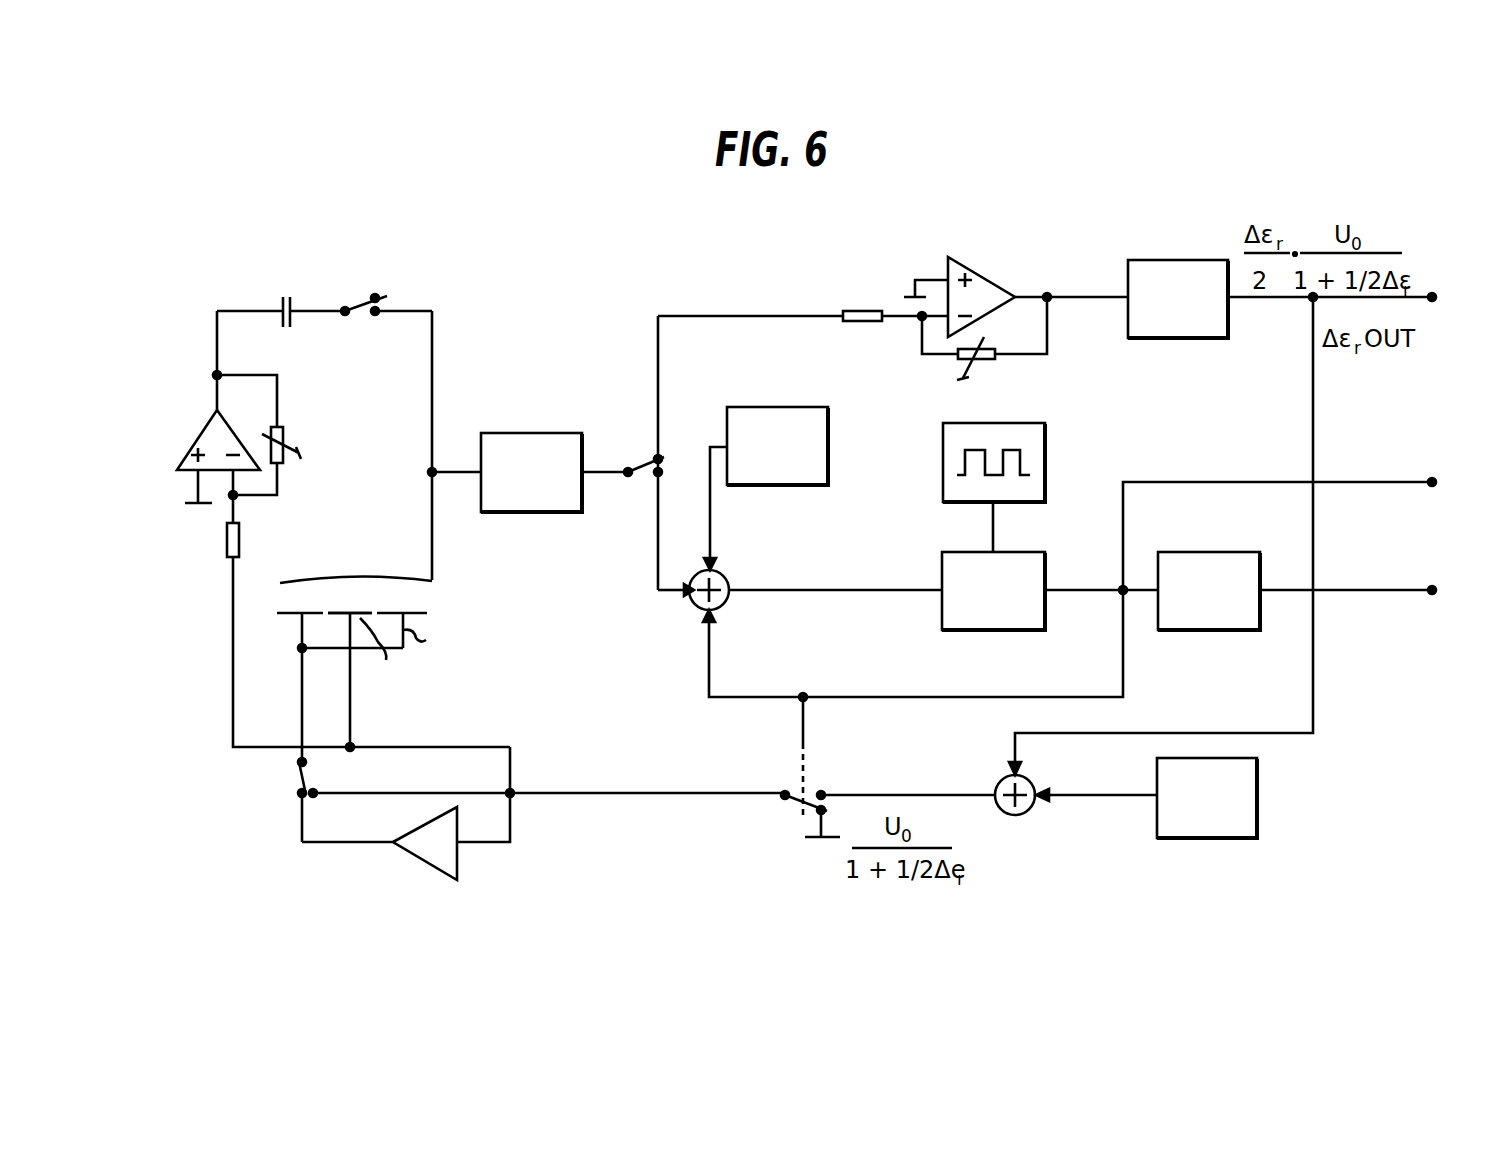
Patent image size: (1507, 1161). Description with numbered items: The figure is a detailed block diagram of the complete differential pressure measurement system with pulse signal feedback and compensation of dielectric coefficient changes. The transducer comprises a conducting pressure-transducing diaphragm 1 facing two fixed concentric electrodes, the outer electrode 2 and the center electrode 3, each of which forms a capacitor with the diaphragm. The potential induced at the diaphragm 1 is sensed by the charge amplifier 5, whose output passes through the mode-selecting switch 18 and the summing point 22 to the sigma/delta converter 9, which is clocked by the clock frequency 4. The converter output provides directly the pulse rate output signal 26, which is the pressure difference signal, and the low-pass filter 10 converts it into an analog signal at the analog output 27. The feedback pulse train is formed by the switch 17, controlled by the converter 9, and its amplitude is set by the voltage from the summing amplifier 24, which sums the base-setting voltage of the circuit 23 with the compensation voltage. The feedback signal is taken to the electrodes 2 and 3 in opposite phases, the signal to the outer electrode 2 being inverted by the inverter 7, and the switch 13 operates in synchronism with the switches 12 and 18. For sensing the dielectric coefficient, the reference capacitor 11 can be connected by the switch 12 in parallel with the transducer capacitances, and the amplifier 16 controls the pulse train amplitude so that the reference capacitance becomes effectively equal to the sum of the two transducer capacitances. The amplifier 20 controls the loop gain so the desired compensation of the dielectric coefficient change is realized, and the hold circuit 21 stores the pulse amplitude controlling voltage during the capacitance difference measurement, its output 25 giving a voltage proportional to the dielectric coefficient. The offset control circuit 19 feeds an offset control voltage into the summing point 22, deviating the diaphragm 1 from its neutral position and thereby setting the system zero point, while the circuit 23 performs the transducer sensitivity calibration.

The pressure-transducing diaphragm 1 is at (335, 582).
The fixed outer electrode 2 is at (296, 620).
The fixed center electrode 3 is at (341, 618).
The clock frequency 4 is at (1020, 423).
The charge amplifier 5 is at (532, 433).
The inverter 7 is at (431, 868).
The sigma/delta converter 9 is at (1015, 552).
The low-pass filter 10 is at (1203, 552).
The reference capacitor 11 is at (281, 303).
The switch 12 is at (348, 290).
The switch 13 is at (298, 774).
The amplifier 16 is at (183, 403).
The switch 17 is at (813, 808).
The switch 18 is at (648, 478).
The offset control circuit 19 is at (755, 407).
The amplifier 20 is at (917, 250).
The hold circuit 21 is at (1150, 260).
The summing point 22 is at (724, 578).
The base setting circuit 23 is at (1203, 839).
The summing amplifier 24 is at (1002, 816).
The output of the hold circuit 25 is at (1436, 292).
The pulse rate output signal 26 is at (1436, 479).
The analog output 27 is at (1436, 587).